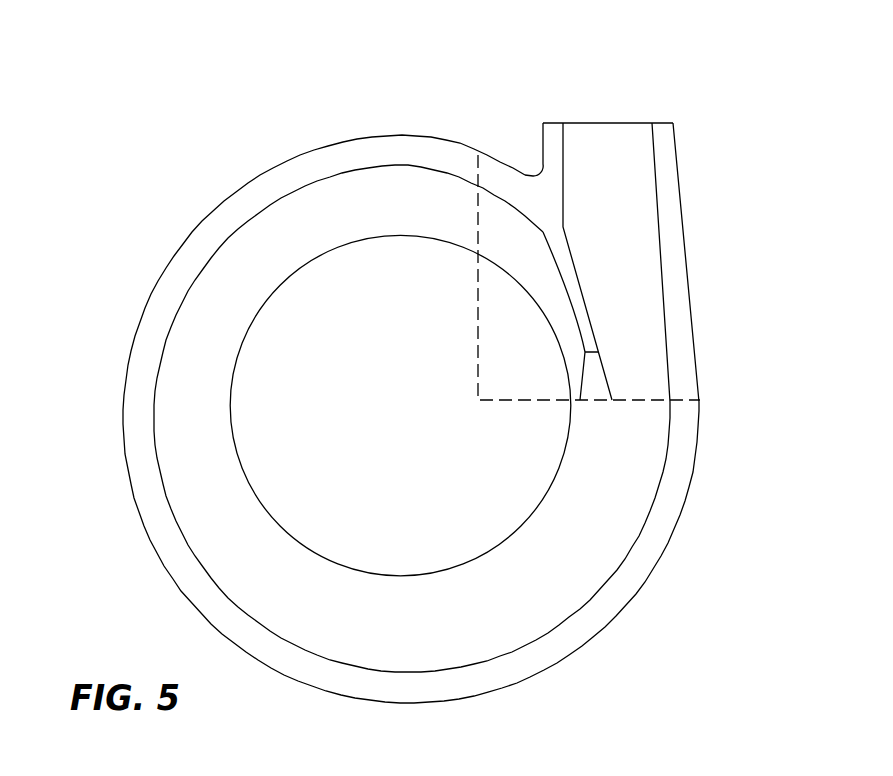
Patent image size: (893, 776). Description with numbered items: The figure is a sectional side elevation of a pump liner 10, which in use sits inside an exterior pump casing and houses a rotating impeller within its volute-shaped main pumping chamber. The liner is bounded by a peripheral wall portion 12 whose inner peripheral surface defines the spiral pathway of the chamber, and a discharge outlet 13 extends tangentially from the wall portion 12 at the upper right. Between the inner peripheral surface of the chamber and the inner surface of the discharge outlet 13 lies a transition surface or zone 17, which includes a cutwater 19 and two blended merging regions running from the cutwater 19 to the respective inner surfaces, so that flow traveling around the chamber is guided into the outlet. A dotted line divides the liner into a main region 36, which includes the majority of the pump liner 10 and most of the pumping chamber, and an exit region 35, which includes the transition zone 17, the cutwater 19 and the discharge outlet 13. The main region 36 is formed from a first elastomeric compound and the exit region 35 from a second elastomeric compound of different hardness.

The pump liner 10 is at (142, 258).
The peripheral wall portion 12 is at (567, 652).
The discharge outlet 13 is at (663, 130).
The transition surface or zone 17 is at (574, 286).
The cutwater 19 is at (545, 232).
The exit region 35 is at (509, 227).
The main region 36 is at (255, 252).